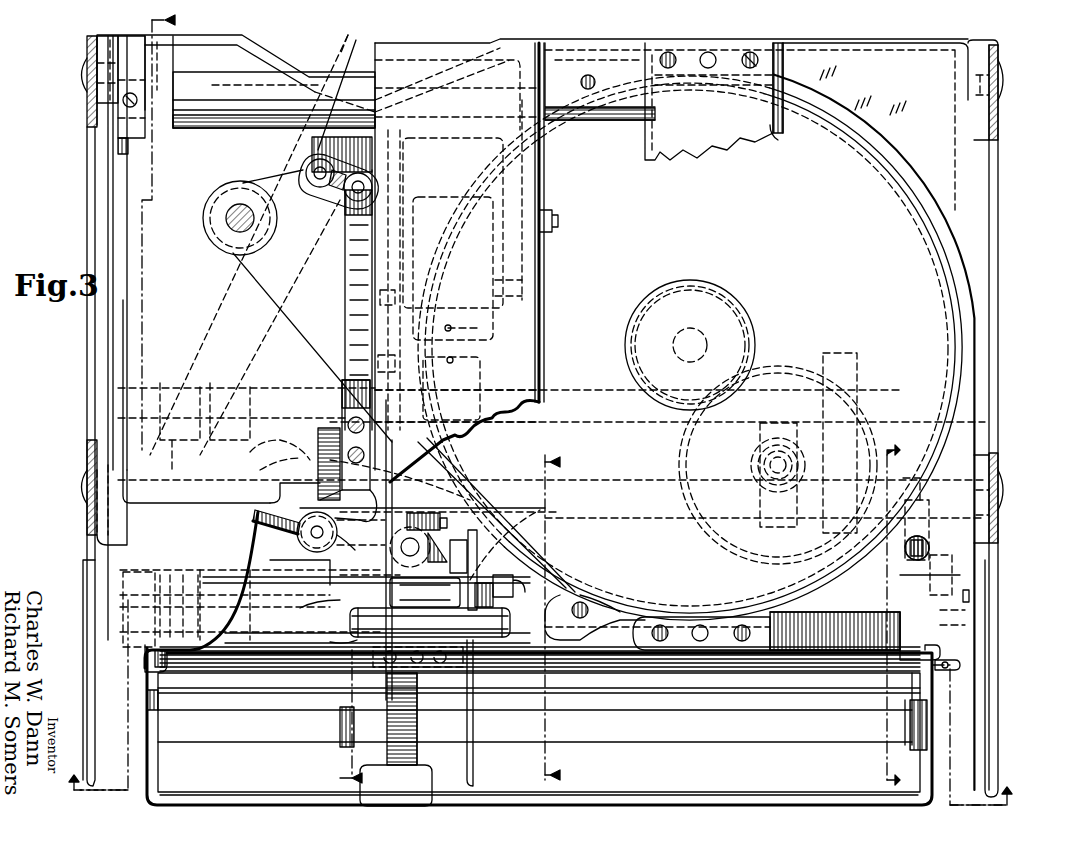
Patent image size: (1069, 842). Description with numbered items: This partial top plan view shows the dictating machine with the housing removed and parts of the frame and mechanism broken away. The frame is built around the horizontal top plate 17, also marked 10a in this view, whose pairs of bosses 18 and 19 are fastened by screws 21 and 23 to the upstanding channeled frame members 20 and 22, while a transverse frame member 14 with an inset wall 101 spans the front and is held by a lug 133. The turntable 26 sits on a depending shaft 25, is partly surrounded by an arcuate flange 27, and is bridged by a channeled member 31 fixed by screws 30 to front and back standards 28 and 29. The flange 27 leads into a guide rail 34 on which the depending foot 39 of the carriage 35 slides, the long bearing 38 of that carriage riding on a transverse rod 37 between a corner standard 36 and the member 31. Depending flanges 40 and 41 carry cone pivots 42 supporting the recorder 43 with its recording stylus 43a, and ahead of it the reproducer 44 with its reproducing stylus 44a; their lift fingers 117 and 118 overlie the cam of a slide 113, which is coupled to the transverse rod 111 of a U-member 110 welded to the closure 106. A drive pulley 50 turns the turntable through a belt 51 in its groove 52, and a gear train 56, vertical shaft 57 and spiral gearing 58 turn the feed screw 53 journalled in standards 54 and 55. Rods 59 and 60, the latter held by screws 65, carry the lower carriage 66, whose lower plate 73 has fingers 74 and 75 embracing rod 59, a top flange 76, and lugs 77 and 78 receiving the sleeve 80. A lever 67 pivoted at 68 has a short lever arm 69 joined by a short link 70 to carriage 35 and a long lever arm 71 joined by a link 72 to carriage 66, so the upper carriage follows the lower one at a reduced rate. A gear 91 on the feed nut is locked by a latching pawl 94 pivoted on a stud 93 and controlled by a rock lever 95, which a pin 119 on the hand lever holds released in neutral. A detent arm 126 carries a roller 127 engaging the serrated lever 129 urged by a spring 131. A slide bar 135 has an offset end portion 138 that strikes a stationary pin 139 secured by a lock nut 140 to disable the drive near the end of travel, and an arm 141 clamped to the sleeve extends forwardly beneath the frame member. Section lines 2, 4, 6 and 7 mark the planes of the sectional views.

The section line 2 is at (537, 782).
The section line 4 is at (257, 398).
The section line 6 is at (898, 616).
The section line 7 is at (558, 621).
The cover plate 10a is at (578, 43).
The transverse frame member 14 is at (946, 733).
The top plate 17 is at (889, 44).
The pair of bosses 18 is at (104, 92).
The pair of bosses 19 is at (1000, 124).
The channeled frame member 20 is at (90, 127).
The screws 21 is at (84, 78).
The channeled frame member 22 is at (1000, 184).
The screws 23 is at (1006, 88).
The shaft 25 is at (690, 343).
The turntable 26 is at (898, 176).
The arcuate flange 27 is at (975, 352).
The front standard 28 is at (718, 612).
The back standard 29 is at (778, 60).
The screws 30 is at (748, 52).
The channeled member 31 is at (780, 135).
The guide rail 34 is at (407, 495).
The carriage 35 is at (546, 316).
The standard 36 is at (145, 130).
The transverse rod 37 is at (162, 95).
The long bearing 38 is at (222, 72).
The depending foot 39 is at (318, 433).
The depending flange 40 is at (405, 168).
The flange 41 is at (530, 178).
The cone pivots 42 is at (552, 230).
The recorder 43 is at (500, 280).
The recording stylus 43a is at (482, 328).
The reproducer 44 is at (500, 366).
The reproducing stylus 44a is at (450, 363).
The drive pulley 50 is at (220, 230).
The belt 51 is at (312, 332).
The groove 52 is at (570, 575).
The feed screw 53 is at (620, 480).
The standard 54 is at (108, 578).
The standard 55 is at (858, 368).
The gear train 56 is at (785, 370).
The vertical shaft 57 is at (770, 460).
The spiral gearing 58 is at (770, 466).
The rod 59 is at (596, 390).
The rod 60 is at (585, 590).
The screws 65 is at (960, 665).
The carriage 66 is at (307, 580).
The lever 67 is at (356, 40).
The pivot 68 is at (346, 50).
The short lever arm 69 is at (318, 148).
The short link 70 is at (340, 198).
The long lever arm 71 is at (206, 318).
The link 72 is at (265, 532).
The lower plate 73 is at (300, 450).
The finger 74 is at (170, 384).
The finger 75 is at (248, 376).
The top flange 76 is at (361, 537).
The lug 77 is at (533, 699).
The lug 78 is at (478, 665).
The sleeve 80 is at (327, 598).
The gear 91 is at (263, 583).
The stud 93 is at (410, 547).
The latching pawl 94 is at (442, 561).
The rock lever 95 is at (345, 410).
The inset wall 101 is at (542, 734).
The closure 106 is at (580, 648).
The U-member 110 is at (505, 632).
The transverse rod 111 is at (331, 643).
The slide 113 is at (385, 565).
The lift finger 117 is at (396, 315).
The lift finger 118 is at (395, 357).
The pin 119 is at (428, 610).
The arm 126 is at (900, 586).
The roller 127 is at (927, 530).
The lever 129 is at (905, 480).
The spring 131 is at (930, 552).
The lug 133 is at (960, 655).
The slide bar 135 is at (323, 577).
The offset end portion 138 is at (513, 597).
The stationary pin 139 is at (970, 596).
The lock nut 140 is at (966, 612).
The arm 141 is at (506, 545).